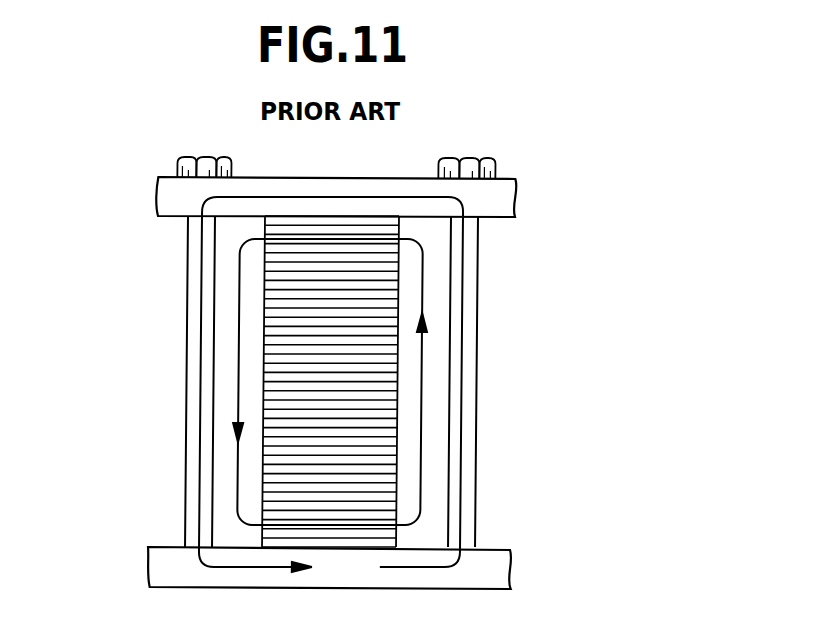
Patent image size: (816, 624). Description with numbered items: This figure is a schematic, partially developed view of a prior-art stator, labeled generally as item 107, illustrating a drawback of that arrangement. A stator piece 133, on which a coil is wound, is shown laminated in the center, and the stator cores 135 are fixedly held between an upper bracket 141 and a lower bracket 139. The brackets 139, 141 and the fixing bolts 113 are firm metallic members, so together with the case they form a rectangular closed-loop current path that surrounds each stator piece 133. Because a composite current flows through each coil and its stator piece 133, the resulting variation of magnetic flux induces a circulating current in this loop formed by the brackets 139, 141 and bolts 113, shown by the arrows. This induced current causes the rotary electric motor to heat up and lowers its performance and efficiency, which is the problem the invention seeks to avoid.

The prior art inductor assembly 107 is at (430, 143).
The bracket 141 is at (170, 193).
The bracket 139 is at (160, 565).
The fixing bolt 113 is at (192, 337).
The stator piece 133 is at (375, 291).
The stator core 135 is at (402, 463).